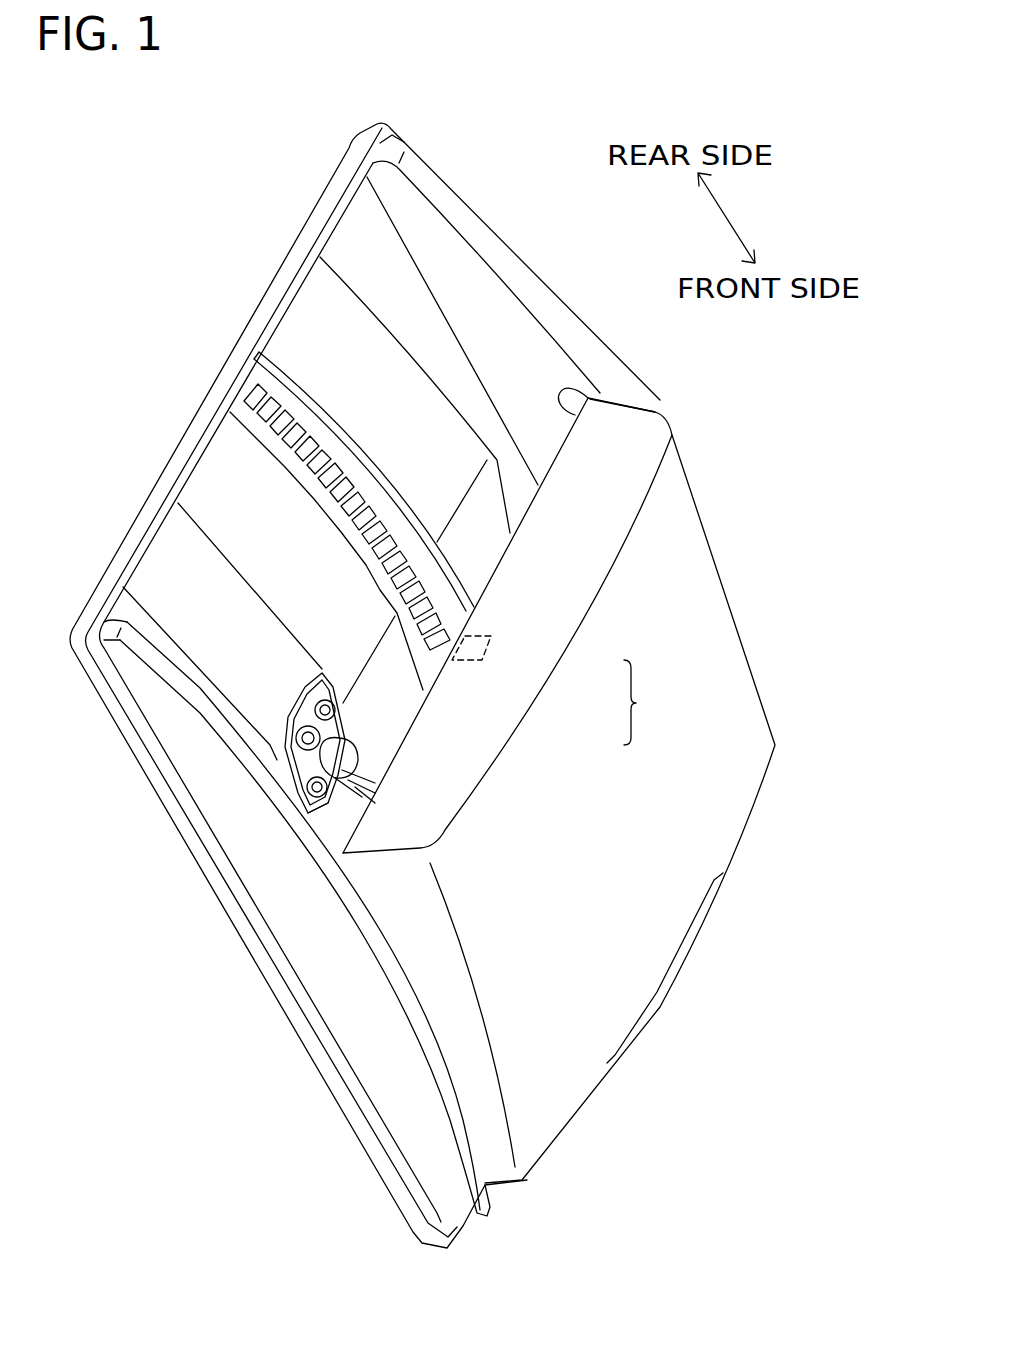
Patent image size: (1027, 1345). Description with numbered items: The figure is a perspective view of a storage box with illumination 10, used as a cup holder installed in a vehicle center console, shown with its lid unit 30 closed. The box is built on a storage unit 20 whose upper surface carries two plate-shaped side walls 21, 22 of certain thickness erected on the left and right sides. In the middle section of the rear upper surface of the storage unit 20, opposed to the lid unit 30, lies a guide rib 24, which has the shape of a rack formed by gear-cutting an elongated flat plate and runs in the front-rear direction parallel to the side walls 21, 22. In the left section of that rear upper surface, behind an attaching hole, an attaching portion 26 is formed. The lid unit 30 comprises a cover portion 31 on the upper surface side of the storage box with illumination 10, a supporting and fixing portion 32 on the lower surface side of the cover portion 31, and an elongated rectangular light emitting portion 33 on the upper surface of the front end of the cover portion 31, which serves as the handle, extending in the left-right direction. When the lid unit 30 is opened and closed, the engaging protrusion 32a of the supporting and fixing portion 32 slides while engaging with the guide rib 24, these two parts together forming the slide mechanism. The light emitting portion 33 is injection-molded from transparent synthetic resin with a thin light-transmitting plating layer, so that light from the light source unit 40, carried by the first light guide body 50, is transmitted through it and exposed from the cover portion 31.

The storage box with illumination 10 is at (759, 95).
The storage unit 20 is at (333, 180).
The side wall 21 is at (207, 797).
The side wall 22 is at (470, 213).
The guide rib 24 is at (430, 592).
The attaching portion 26 is at (322, 673).
The lid unit 30 is at (708, 557).
The cover portion 31 is at (658, 413).
The supporting and fixing portion 32 is at (564, 378).
The engaging protrusion 32a is at (484, 660).
The light emitting portion 33 is at (668, 981).
The light source unit 40 is at (328, 803).
The first light guide body 50 is at (345, 745).